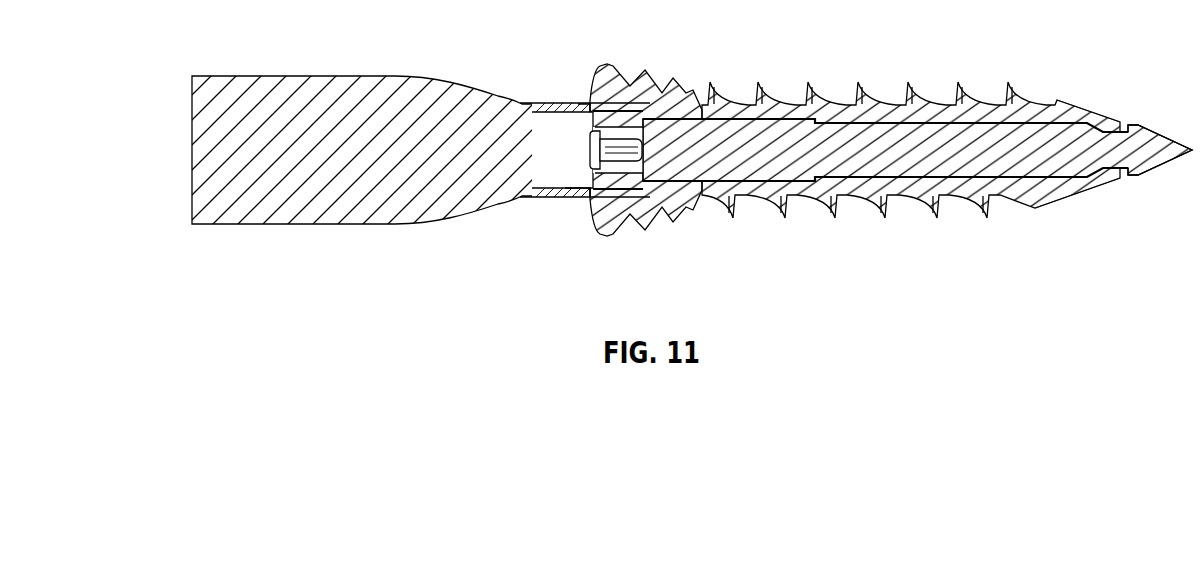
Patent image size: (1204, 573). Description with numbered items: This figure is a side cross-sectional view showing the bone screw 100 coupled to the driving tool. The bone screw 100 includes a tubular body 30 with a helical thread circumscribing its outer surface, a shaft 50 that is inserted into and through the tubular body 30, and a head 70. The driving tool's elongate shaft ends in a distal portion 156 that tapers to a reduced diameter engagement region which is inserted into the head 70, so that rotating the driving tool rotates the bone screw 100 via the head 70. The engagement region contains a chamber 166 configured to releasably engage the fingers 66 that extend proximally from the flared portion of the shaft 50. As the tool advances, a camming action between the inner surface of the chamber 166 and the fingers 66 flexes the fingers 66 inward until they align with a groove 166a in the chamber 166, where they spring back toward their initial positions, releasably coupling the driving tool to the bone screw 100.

The distal portion 156 is at (502, 122).
The groove 166a is at (578, 112).
The head 70 is at (660, 64).
The tubular body 30 is at (930, 80).
The shaft 50 is at (1078, 146).
The chamber 166 is at (572, 192).
The fingers 66 is at (636, 178).
The bone screw 100 is at (1081, 225).